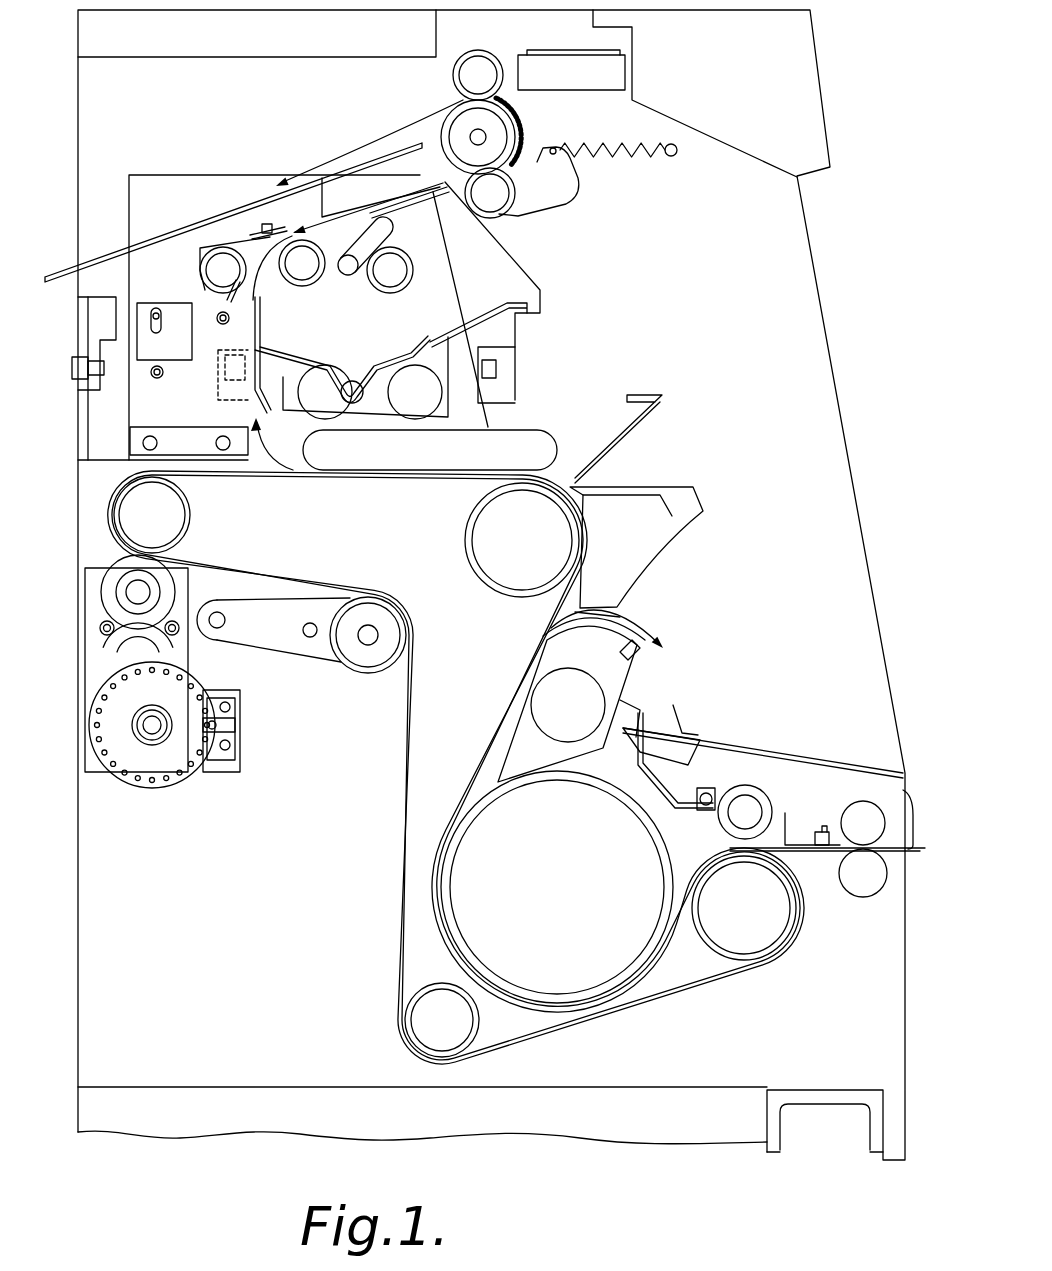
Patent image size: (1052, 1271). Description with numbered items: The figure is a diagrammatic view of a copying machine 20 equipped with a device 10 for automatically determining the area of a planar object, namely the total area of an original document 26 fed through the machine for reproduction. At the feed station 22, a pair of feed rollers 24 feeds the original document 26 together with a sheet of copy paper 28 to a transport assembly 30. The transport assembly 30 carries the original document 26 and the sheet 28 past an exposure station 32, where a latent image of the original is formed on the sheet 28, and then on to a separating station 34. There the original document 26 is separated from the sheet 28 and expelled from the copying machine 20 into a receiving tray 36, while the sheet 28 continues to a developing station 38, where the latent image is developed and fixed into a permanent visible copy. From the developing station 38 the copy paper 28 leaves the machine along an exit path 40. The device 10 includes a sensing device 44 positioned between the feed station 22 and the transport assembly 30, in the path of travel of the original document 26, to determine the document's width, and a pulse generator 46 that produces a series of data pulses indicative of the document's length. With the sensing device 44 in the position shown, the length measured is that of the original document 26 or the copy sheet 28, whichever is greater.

The device for automatically determining the area of a planar object 10 is at (290, 872).
The copying machine 20 is at (874, 511).
The feed station 22 is at (837, 895).
The feed rollers 24 is at (852, 812).
The original document 26 is at (905, 822).
The sheet of copy paper 28 is at (920, 855).
The transport assembly 30 is at (699, 1005).
The exposure station 32 is at (601, 968).
The separating station 34 is at (516, 653).
The receiving tray 36 is at (800, 750).
The developing station 38 is at (622, 314).
The exit path 40 is at (117, 262).
The sensing device 44 is at (790, 790).
The pulse generator 46 is at (203, 790).